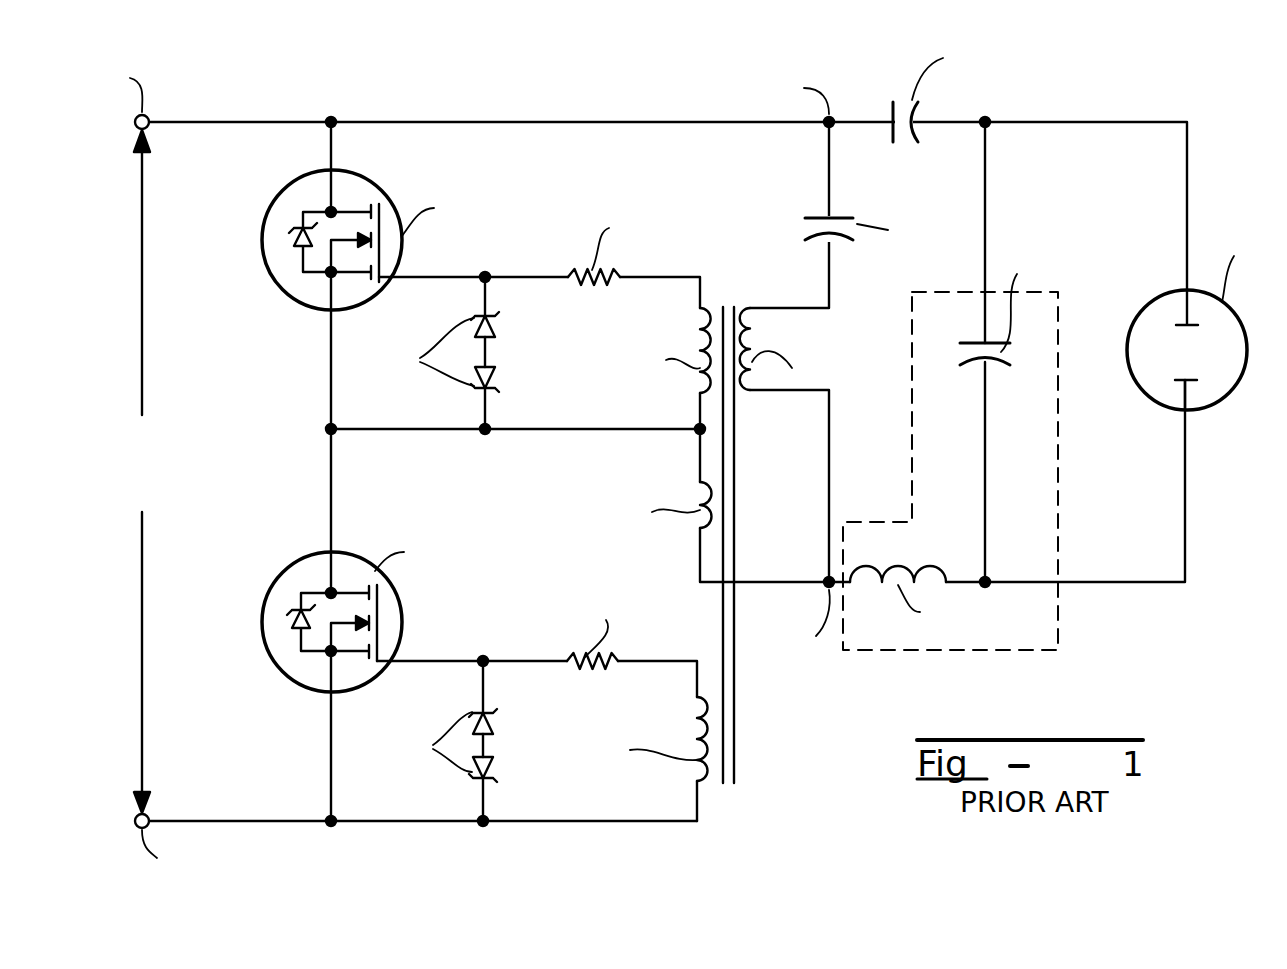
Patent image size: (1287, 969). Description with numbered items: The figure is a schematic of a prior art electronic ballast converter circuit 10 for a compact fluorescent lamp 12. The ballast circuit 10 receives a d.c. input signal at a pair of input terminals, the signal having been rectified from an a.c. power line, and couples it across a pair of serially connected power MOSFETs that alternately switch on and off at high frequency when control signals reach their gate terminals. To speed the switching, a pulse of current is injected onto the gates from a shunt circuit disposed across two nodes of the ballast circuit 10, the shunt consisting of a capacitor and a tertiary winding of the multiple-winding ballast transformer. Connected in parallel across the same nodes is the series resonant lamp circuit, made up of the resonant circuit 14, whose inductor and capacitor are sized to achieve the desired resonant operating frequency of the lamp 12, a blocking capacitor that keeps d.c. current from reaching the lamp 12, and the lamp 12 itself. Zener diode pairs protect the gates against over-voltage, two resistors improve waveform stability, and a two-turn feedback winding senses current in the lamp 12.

The ballast converter circuit 10 is at (601, 57).
The compact fluorescent lamp 12 is at (1243, 360).
The resonant circuit 14 is at (1060, 505).